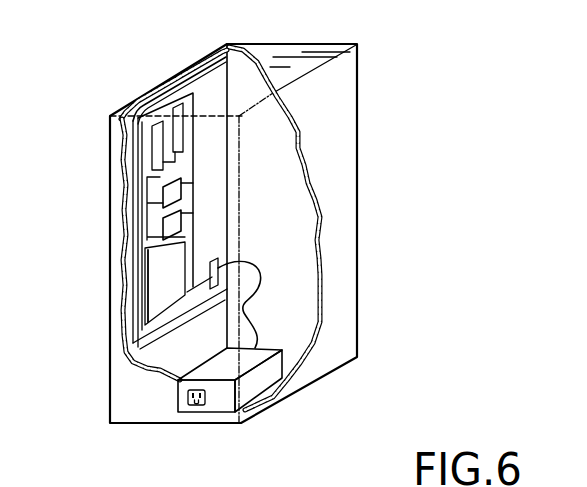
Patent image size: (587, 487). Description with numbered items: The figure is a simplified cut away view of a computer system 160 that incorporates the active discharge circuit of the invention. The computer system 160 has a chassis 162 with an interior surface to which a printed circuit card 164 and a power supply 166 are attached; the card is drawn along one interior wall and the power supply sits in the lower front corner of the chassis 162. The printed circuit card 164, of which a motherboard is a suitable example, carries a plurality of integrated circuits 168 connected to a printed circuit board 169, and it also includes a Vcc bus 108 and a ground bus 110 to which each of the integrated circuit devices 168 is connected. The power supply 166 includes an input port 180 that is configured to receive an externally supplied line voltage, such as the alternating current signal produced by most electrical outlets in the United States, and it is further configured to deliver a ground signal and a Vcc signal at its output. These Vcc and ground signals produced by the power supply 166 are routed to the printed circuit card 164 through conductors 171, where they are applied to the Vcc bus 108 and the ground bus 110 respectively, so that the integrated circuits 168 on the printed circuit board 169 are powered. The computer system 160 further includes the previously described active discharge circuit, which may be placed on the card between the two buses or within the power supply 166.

The computer system 160 is at (384, 162).
The chassis 162 is at (350, 111).
The printed circuit card 164 is at (212, 95).
The Vcc bus 108 is at (148, 213).
The ground bus 110 is at (193, 138).
The integrated circuits 168 is at (193, 183).
The printed circuit board 169 is at (227, 246).
The conductors 171 is at (236, 293).
The power supply 166 is at (263, 378).
The input port 180 is at (205, 400).